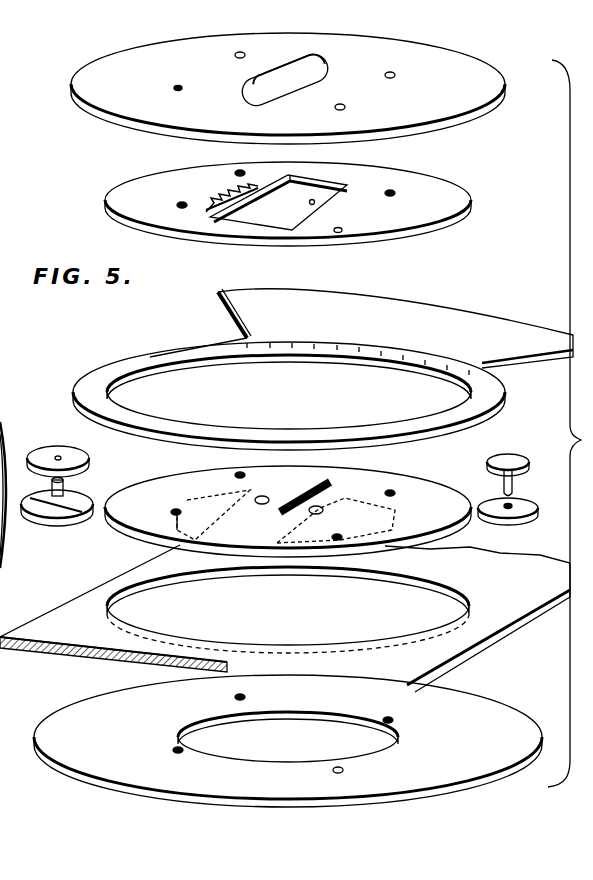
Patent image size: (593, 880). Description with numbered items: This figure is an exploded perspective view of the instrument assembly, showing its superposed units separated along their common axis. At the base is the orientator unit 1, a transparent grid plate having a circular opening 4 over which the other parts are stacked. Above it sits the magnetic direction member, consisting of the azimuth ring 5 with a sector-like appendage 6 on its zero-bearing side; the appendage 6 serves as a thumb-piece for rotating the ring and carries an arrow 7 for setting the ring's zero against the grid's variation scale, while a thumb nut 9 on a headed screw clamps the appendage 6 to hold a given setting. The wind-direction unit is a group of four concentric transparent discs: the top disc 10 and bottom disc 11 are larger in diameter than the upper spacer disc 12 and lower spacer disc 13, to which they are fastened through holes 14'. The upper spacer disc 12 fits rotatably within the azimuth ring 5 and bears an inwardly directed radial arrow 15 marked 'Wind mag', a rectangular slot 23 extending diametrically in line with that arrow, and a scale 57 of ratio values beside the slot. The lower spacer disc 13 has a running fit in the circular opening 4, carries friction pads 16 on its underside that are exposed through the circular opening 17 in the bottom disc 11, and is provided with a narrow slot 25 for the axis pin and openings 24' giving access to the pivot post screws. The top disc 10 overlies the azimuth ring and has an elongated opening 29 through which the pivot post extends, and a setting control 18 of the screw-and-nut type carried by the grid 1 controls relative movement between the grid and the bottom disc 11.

The top disc 10 is at (98, 62).
The holes 14' is at (288, 412).
The opening 29 is at (245, 98).
The upper spacer disc 12 is at (130, 184).
The radial arrow 15 is at (327, 175).
The rectangular slot 23 is at (315, 203).
The scale 57 is at (232, 198).
The sector-like appendage 6 is at (532, 326).
The azimuth ring 5 is at (154, 357).
The arrow 7 is at (367, 344).
The bottom disc 11 is at (4, 428).
The setting control 18 is at (78, 498).
The lower spacer disc 13 is at (129, 489).
The friction pads 16 is at (198, 494).
The openings 24' is at (286, 507).
The narrow slot 25 is at (331, 491).
The thumb nut 9 is at (518, 467).
The circular opening 4 is at (430, 602).
The orientator unit 1 is at (82, 635).
The circular opening 17 is at (228, 750).